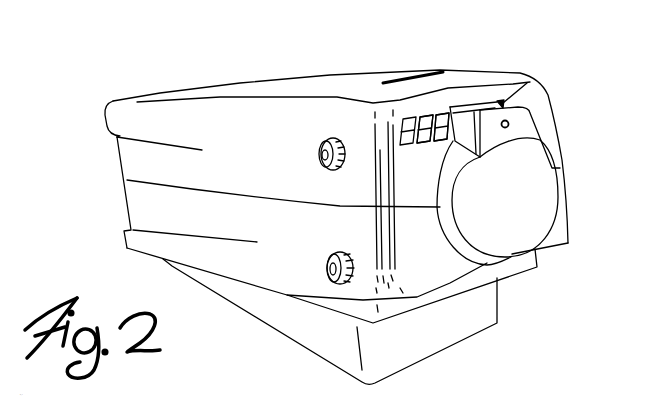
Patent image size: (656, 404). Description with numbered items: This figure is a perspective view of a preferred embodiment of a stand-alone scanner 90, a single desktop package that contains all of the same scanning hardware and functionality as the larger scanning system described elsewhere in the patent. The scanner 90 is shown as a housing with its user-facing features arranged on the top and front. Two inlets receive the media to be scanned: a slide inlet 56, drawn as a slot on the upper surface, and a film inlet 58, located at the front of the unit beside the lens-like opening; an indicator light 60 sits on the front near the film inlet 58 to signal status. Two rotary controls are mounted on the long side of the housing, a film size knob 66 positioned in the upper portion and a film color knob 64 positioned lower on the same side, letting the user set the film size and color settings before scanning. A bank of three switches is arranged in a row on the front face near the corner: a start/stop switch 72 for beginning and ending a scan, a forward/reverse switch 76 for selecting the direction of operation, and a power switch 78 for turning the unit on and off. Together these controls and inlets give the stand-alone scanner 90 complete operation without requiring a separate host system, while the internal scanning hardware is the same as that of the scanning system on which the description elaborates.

The stand-alone scanner 90 is at (133, 52).
The slide inlet 56 is at (407, 70).
The film inlet 58 is at (527, 82).
The indicator light 60 is at (509, 123).
The film color knob 64 is at (327, 262).
The film size knob 66 is at (313, 150).
The start/stop switch 72 is at (397, 115).
The forward/reverse switch 76 is at (420, 112).
The power switch 78 is at (445, 114).